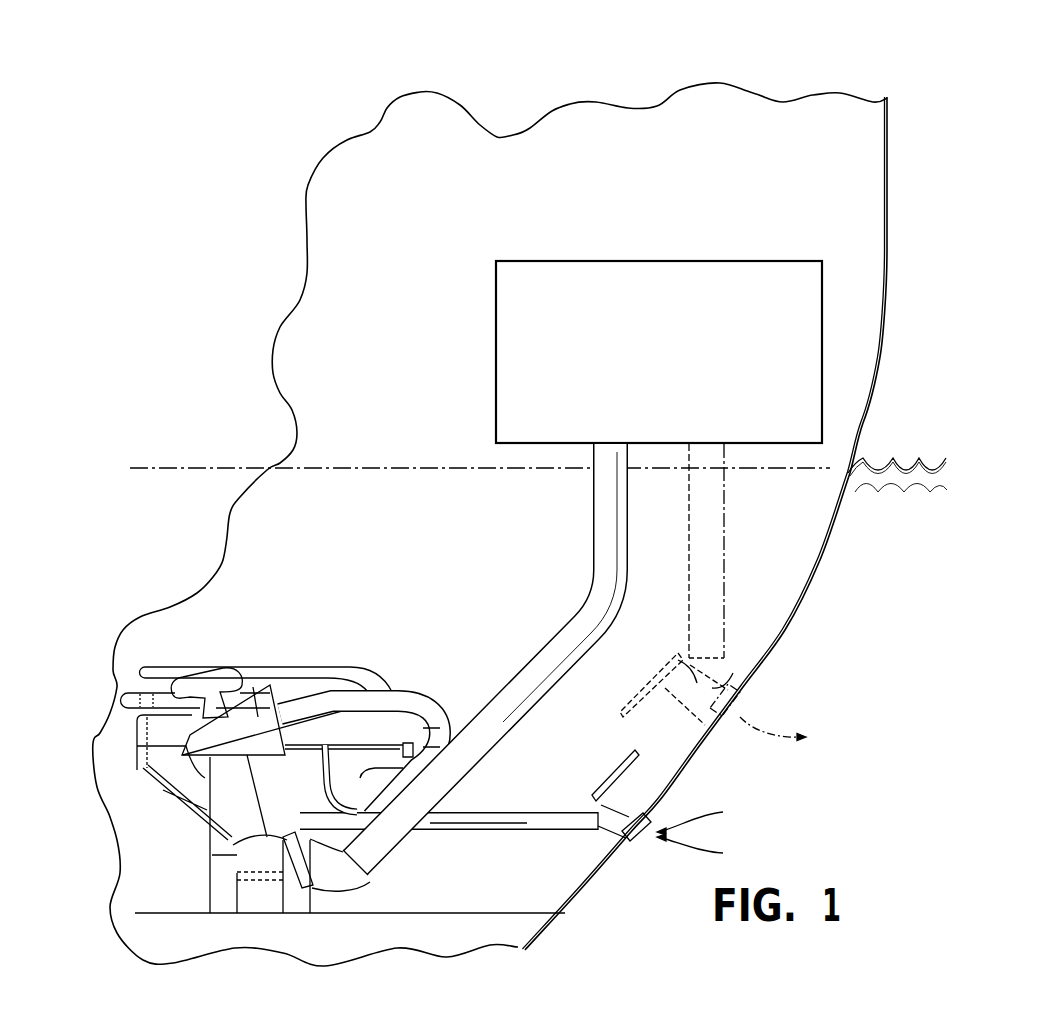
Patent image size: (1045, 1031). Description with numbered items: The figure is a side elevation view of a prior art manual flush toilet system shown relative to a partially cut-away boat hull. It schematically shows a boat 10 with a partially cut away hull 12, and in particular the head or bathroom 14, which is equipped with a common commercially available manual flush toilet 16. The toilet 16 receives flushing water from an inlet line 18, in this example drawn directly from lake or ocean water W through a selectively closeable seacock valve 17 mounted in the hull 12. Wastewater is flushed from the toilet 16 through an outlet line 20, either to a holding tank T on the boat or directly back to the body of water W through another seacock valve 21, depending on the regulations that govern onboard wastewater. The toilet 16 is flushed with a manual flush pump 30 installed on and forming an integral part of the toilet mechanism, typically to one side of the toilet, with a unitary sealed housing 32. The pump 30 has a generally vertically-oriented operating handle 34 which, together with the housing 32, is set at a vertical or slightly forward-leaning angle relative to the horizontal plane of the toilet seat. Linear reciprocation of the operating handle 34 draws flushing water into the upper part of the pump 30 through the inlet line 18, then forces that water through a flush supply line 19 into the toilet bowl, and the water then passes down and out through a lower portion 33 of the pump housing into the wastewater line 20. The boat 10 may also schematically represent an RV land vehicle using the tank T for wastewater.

The boat 10 is at (570, 104).
The hull 12 is at (784, 631).
The head or bathroom 14 is at (275, 565).
The manual flush toilet 16 is at (164, 790).
The seacock valve 17 is at (627, 840).
The inlet line 18 is at (548, 822).
The flush supply line 19 is at (387, 832).
The outlet line 20 is at (487, 733).
The seacock valve 21 is at (742, 677).
The manual flush pump 30 is at (189, 737).
The housing 32 is at (208, 767).
The lower portion of the pump housing 33 is at (228, 808).
The operating handle 34 is at (207, 688).
The holding tank T is at (751, 260).
The water W is at (903, 490).